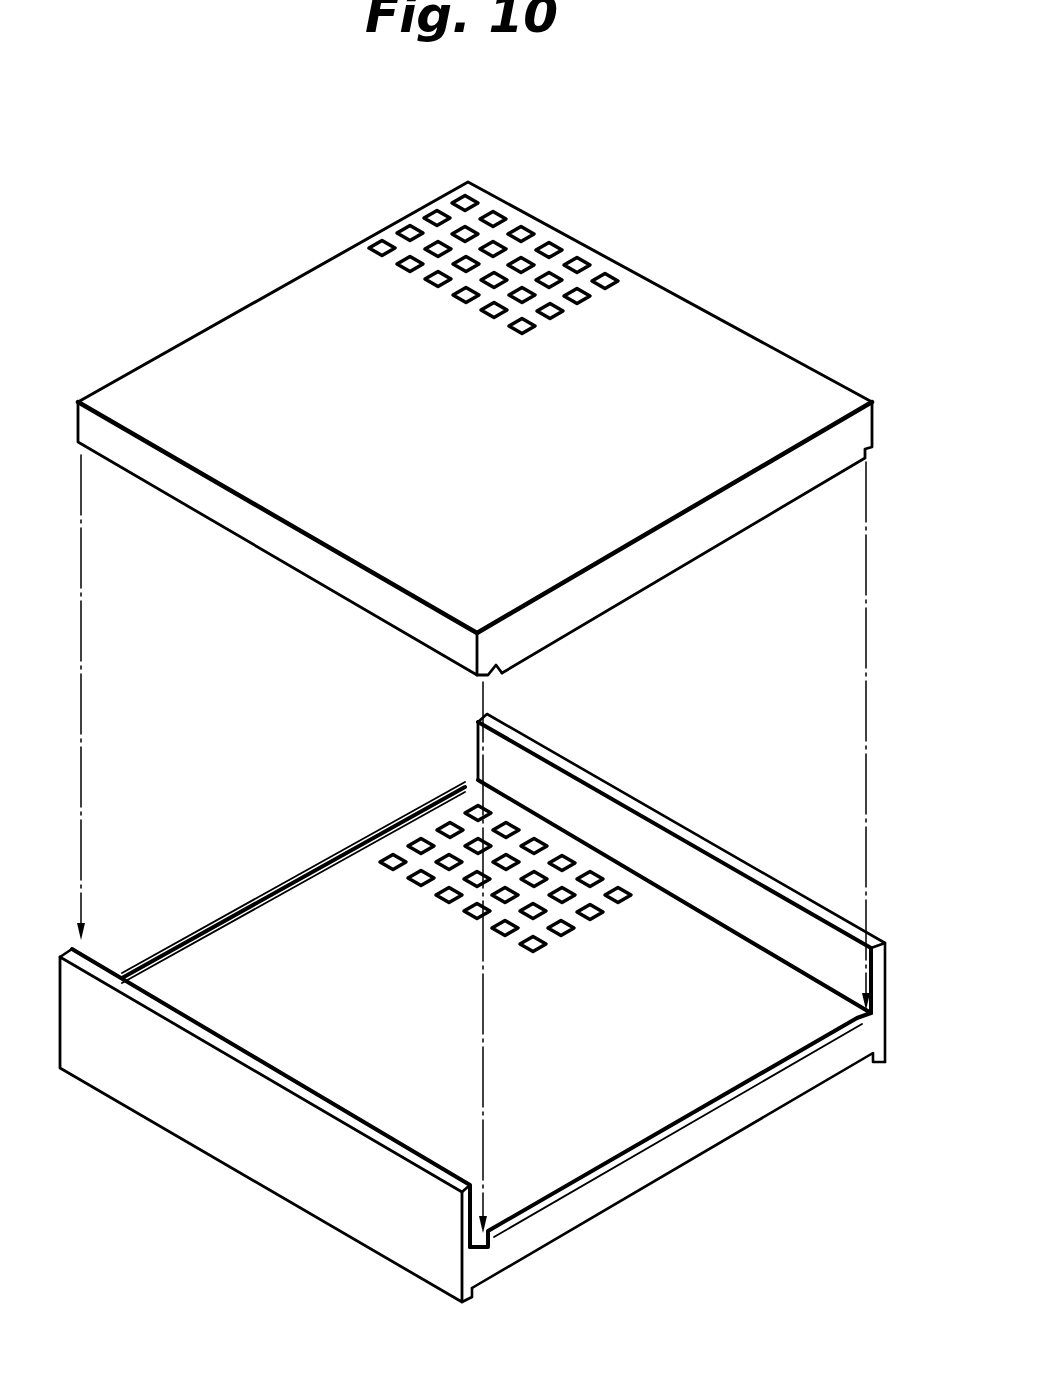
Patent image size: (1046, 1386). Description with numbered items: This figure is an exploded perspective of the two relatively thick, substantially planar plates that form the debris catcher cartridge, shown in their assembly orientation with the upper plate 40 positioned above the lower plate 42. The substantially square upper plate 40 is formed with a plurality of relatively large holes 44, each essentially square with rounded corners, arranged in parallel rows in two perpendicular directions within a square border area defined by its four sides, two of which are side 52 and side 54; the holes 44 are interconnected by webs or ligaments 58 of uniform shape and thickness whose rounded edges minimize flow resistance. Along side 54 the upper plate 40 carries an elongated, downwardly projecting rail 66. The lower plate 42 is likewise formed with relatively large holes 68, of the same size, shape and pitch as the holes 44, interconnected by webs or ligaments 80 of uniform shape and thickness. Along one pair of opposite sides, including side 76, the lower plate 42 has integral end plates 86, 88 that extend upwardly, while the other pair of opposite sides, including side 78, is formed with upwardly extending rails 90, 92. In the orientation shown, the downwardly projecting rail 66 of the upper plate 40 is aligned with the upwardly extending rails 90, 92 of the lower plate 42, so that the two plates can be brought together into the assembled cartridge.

The upper plate 40 is at (475, 430).
The lower plate 42 is at (472, 1008).
The holes 44 is at (493, 268).
The webs or ligaments 58 is at (545, 317).
The side 52 is at (353, 588).
The side 54 is at (653, 572).
The rail 66 is at (547, 647).
The holes 68 is at (567, 928).
The webs or ligaments 80 is at (505, 893).
The side 76 is at (266, 1125).
The side 78 is at (677, 1150).
The end plate 86 is at (767, 882).
The end plate 88 is at (328, 1108).
The rail 90 is at (187, 940).
The rail 92 is at (652, 1130).